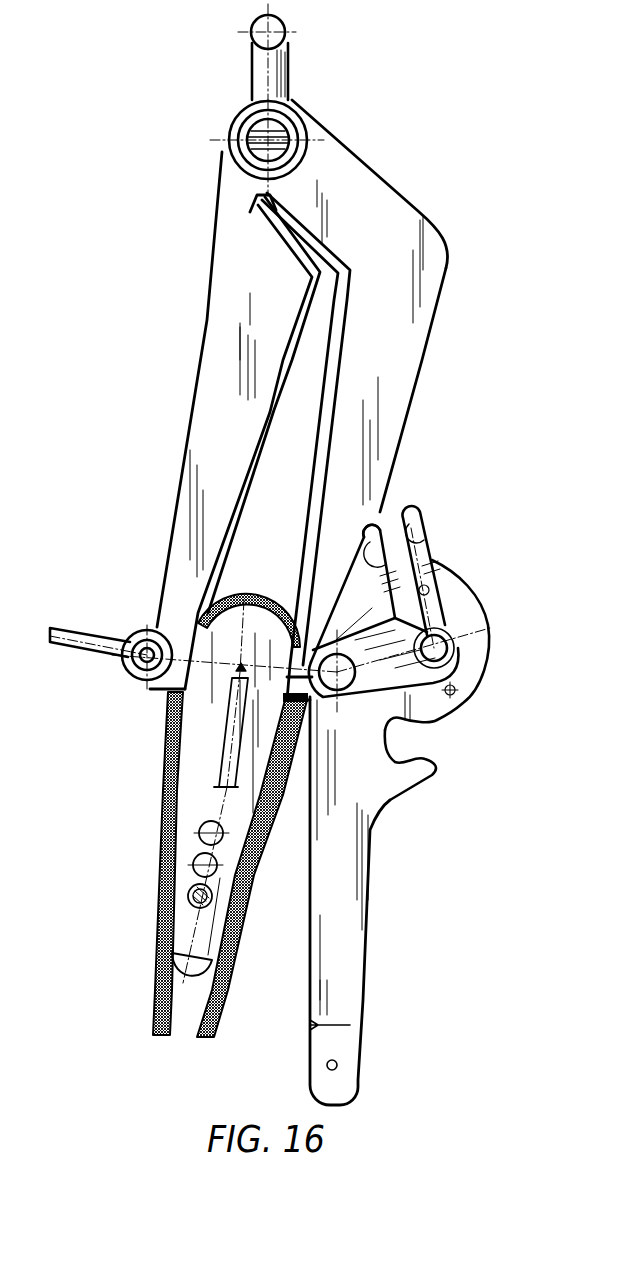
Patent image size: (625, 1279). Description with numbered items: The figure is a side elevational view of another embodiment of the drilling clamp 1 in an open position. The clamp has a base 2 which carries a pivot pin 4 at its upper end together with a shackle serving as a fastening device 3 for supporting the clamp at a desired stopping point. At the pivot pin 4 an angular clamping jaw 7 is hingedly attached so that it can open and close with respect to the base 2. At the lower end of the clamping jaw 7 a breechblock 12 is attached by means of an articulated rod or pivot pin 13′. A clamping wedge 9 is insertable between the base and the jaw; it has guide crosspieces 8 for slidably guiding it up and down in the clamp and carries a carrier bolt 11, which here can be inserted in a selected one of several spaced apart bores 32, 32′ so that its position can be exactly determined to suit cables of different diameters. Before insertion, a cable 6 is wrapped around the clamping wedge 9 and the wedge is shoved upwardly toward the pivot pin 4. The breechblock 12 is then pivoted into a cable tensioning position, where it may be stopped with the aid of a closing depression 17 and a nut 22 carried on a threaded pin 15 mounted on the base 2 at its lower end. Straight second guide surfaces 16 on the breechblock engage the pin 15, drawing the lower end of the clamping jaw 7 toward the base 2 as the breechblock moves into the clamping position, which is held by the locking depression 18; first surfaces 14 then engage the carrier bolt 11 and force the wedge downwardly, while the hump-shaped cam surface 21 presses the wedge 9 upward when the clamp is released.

The drilling clamp 1 is at (394, 176).
The base 2 is at (213, 358).
The fastening device 3 is at (278, 62).
The pivot pin 4 is at (250, 124).
The cable 6 is at (162, 1045).
The clamping jaw 7 is at (395, 368).
The guide crosspiece 8 is at (228, 733).
The clamping wedge 9 is at (193, 778).
The carrier bolt 11 is at (192, 902).
The breechblock 12 is at (342, 943).
The articulated rod or pivot pin 13′ is at (340, 705).
The first surfaces 14 is at (424, 760).
The threaded pin 15 is at (132, 634).
The second guide surfaces 16 is at (427, 597).
The closing depression 17 is at (427, 530).
The locking depression 18 is at (447, 647).
The hump-shaped cam surface 21 is at (477, 690).
The nut 22 is at (62, 652).
The bore 32 is at (228, 908).
The bore 32′ is at (196, 858).